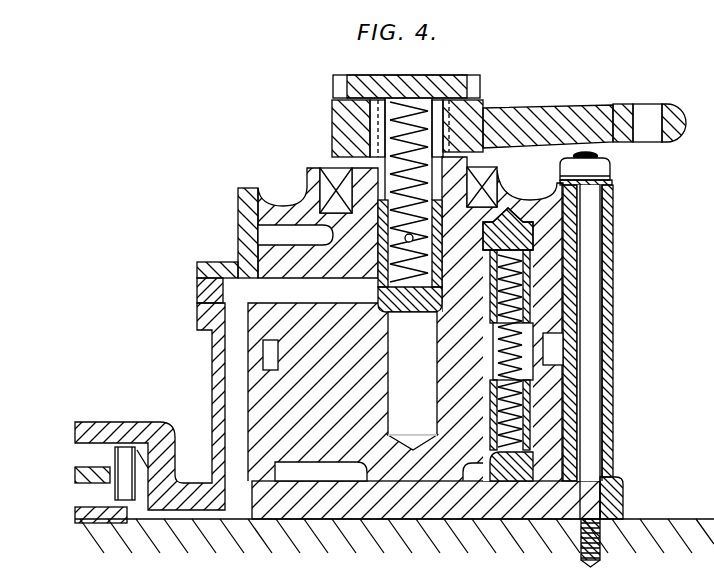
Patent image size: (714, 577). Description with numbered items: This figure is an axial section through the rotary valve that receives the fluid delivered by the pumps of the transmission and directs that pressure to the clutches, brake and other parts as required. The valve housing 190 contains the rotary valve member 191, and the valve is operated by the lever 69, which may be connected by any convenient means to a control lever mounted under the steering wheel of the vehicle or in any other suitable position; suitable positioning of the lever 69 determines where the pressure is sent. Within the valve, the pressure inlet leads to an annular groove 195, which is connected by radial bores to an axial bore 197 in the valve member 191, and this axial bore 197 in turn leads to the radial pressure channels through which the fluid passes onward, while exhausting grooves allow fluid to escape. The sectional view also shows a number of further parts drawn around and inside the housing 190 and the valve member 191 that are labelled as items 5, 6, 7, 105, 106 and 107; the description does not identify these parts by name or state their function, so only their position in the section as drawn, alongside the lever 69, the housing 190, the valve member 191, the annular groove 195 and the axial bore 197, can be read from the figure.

The spring 107 is at (402, 90).
The lever 69 is at (667, 113).
The housing flange 105 is at (265, 287).
The cylinder wall 5 is at (197, 294).
The annular groove 195 is at (268, 348).
The seal ring 6 is at (262, 355).
The body wall 7 is at (228, 414).
The plunger cup 106 is at (418, 302).
The axial bore 197 is at (420, 388).
The rotary valve member 191 is at (568, 249).
The valve housing 190 is at (611, 262).